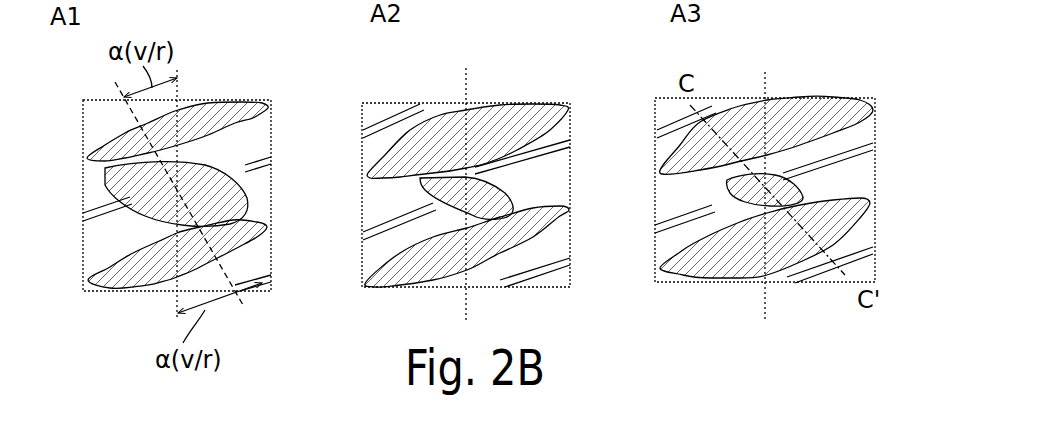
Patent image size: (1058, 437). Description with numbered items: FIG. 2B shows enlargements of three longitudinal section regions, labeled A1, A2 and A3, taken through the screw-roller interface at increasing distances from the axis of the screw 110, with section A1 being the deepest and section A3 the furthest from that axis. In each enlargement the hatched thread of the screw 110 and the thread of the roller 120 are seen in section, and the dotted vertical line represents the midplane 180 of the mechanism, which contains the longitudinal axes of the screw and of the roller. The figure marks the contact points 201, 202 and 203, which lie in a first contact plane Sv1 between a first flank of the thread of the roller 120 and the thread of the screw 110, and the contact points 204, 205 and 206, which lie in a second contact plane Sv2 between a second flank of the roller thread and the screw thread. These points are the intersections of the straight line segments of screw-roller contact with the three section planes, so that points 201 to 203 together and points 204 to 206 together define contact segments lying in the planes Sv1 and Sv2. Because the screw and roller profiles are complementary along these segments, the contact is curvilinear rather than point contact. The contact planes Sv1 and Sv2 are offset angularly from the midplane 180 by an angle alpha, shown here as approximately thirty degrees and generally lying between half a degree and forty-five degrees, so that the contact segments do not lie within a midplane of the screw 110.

The screw 110 is at (228, 245).
The roller 120 is at (83, 213).
The midplane 180 is at (178, 88).
The contact point 201 is at (233, 245).
The contact point 202 is at (528, 218).
The contact point 203 is at (772, 168).
The contact point 204 is at (100, 128).
The contact point 205 is at (367, 178).
The contact point 206 is at (662, 168).
The first contact plane Sv1 is at (190, 192).
The second contact plane Sv2 is at (155, 212).